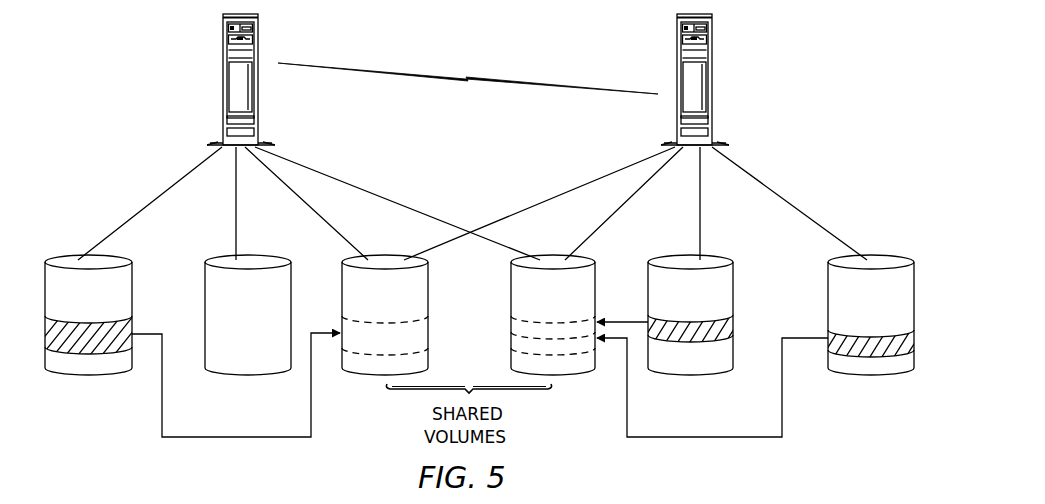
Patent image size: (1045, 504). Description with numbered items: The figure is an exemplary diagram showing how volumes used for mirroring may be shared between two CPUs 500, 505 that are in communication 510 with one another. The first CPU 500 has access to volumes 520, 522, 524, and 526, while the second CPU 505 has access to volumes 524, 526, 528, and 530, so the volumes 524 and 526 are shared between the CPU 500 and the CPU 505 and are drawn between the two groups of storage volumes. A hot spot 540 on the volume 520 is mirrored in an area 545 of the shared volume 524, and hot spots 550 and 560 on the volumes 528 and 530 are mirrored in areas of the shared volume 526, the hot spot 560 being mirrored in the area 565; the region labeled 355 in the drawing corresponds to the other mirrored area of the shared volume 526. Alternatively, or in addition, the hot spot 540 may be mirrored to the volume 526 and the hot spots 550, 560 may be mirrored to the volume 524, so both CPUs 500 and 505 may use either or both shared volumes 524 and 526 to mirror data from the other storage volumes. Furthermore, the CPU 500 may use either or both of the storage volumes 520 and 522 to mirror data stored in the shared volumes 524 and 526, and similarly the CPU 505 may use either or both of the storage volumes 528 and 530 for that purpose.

The CPU 500 is at (222, 82).
The CPU 505 is at (713, 82).
The communication 510 is at (540, 83).
The volume 520 is at (81, 376).
The volume 522 is at (230, 376).
The shared volume 524 is at (368, 376).
The shared volume 526 is at (574, 376).
The volume 528 is at (700, 376).
The volume 530 is at (880, 376).
The hot spot 540 is at (133, 322).
The area 545 is at (428, 348).
The hot spot 550 is at (733, 317).
The hot spot 560 is at (828, 336).
The data region 355 is at (511, 316).
The area 565 is at (511, 332).